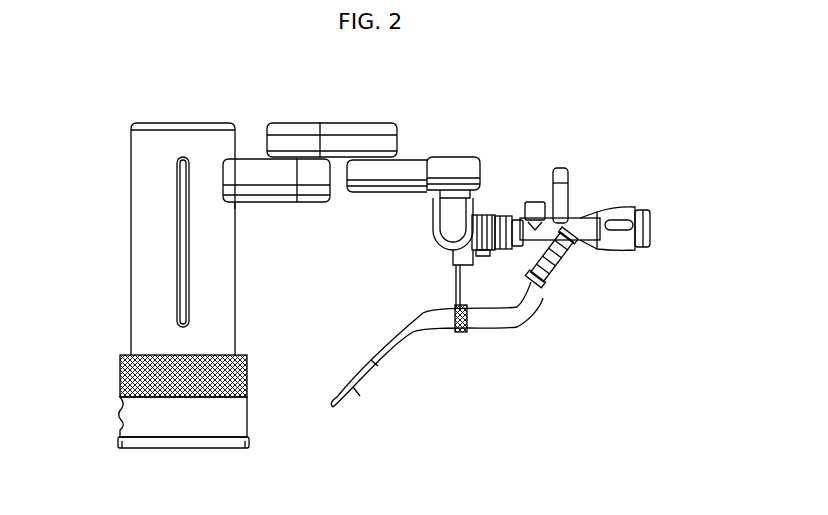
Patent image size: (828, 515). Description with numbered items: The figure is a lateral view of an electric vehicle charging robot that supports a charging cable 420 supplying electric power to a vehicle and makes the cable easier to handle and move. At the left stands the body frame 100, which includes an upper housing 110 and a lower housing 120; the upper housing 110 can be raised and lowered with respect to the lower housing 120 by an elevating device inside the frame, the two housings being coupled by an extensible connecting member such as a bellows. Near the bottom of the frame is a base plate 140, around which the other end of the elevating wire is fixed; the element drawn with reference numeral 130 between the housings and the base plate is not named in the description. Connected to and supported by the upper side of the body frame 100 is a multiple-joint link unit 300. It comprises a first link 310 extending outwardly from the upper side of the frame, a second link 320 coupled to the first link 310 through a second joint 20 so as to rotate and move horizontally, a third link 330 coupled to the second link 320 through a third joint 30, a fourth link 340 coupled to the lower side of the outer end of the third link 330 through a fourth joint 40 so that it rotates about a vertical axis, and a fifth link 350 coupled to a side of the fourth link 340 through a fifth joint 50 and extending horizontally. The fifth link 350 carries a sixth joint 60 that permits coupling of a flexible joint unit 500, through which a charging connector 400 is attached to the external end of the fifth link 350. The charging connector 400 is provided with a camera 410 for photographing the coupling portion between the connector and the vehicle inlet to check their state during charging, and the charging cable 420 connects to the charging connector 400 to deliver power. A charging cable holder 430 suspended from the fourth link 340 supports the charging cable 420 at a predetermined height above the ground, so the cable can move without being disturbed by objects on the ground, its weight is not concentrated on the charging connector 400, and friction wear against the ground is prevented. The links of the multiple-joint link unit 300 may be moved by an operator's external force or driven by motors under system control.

The body frame 100 is at (122, 171).
The upper housing 110 is at (148, 212).
The lower housing 120 is at (138, 418).
The base section 130 is at (120, 370).
The base plate 140 is at (118, 440).
The multiple-joint link unit 300 is at (505, 78).
The first link 310 is at (262, 178).
The second joint 20 is at (322, 178).
The second link 320 is at (338, 123).
The third joint 30 is at (381, 123).
The third link 330 is at (426, 160).
The fourth joint 40 is at (467, 157).
The fourth link 340 is at (440, 222).
The fifth joint 50 is at (453, 252).
The fifth link 350 is at (485, 216).
The flexible joint unit 500 is at (508, 216).
The sixth joint 60 is at (483, 257).
The charging connector 400 is at (650, 228).
The camera 410 is at (570, 188).
The charging cable 420 is at (375, 360).
The charging cable holder 430 is at (456, 290).